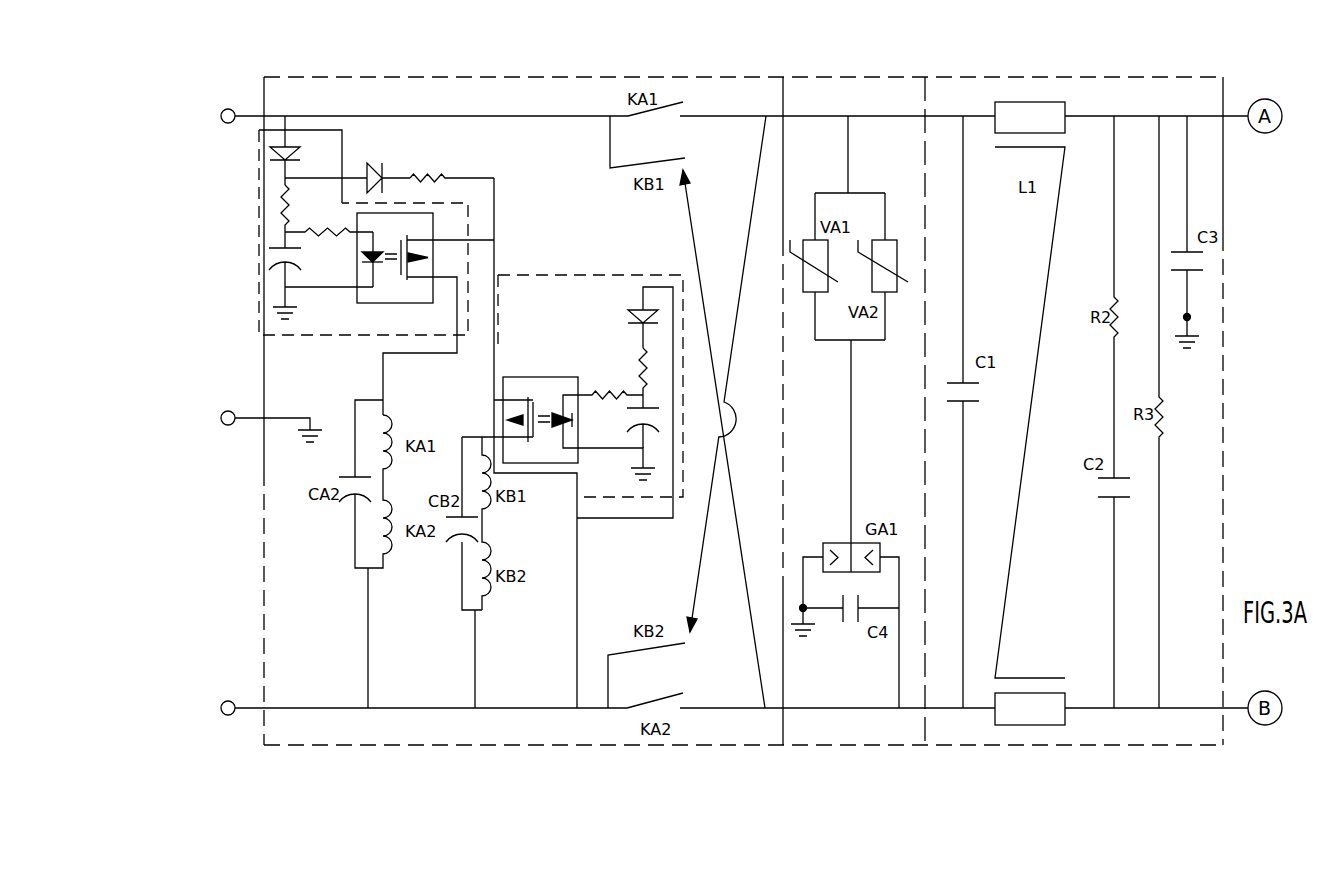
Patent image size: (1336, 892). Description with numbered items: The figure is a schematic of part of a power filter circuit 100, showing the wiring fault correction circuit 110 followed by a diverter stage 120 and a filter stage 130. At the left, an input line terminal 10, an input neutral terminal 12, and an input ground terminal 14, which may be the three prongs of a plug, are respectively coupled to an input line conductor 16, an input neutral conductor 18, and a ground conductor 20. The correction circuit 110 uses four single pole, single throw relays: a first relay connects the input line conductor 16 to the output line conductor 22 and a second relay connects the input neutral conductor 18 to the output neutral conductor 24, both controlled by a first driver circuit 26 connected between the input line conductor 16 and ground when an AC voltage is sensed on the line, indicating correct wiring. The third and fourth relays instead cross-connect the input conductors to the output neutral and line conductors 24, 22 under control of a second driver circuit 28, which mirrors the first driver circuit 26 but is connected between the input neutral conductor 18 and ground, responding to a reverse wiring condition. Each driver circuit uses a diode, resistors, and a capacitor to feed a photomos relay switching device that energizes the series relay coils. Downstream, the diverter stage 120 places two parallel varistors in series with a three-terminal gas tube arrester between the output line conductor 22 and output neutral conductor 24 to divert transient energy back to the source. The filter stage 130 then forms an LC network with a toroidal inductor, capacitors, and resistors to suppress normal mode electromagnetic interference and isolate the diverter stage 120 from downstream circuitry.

The input line terminal 10 is at (226, 123).
The input neutral terminal 12 is at (226, 715).
The input ground terminal 14 is at (226, 425).
The input line conductor 16 is at (330, 116).
The input neutral conductor 18 is at (290, 708).
The ground conductor 20 is at (275, 418).
The output line conductor 22 is at (733, 116).
The output neutral conductor 24 is at (711, 708).
The first driver circuit 26 is at (259, 322).
The second driver circuit 28 is at (590, 275).
The power filter circuit 100 is at (957, 49).
The wiring fault correction circuit 110 is at (523, 382).
The diverter stage 120 is at (864, 382).
The filter stage 130 is at (1138, 382).